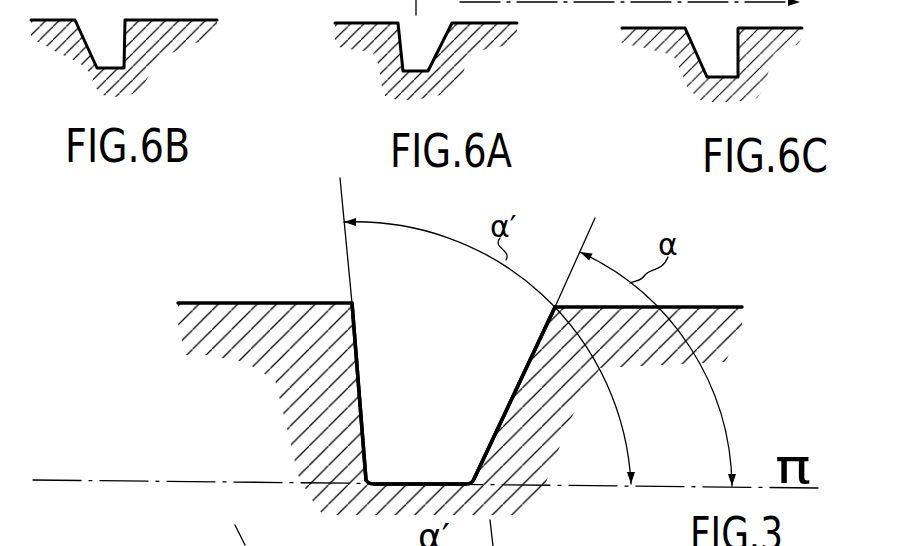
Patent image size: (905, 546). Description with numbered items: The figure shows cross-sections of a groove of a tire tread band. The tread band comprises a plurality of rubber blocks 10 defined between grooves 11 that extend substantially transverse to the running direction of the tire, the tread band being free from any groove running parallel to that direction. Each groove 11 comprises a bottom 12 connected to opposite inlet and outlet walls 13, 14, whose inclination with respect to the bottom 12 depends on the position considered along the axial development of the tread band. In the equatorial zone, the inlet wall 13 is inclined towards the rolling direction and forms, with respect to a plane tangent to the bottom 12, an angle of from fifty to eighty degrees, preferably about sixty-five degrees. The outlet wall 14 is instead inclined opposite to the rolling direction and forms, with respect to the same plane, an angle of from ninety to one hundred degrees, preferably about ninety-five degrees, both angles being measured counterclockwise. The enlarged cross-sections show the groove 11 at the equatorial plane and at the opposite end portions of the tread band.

The rubber blocks 10 is at (249, 295).
The grooves 11 is at (458, 352).
The bottom 12 is at (415, 483).
The inlet wall 13 is at (513, 393).
The outlet wall 14 is at (363, 410).